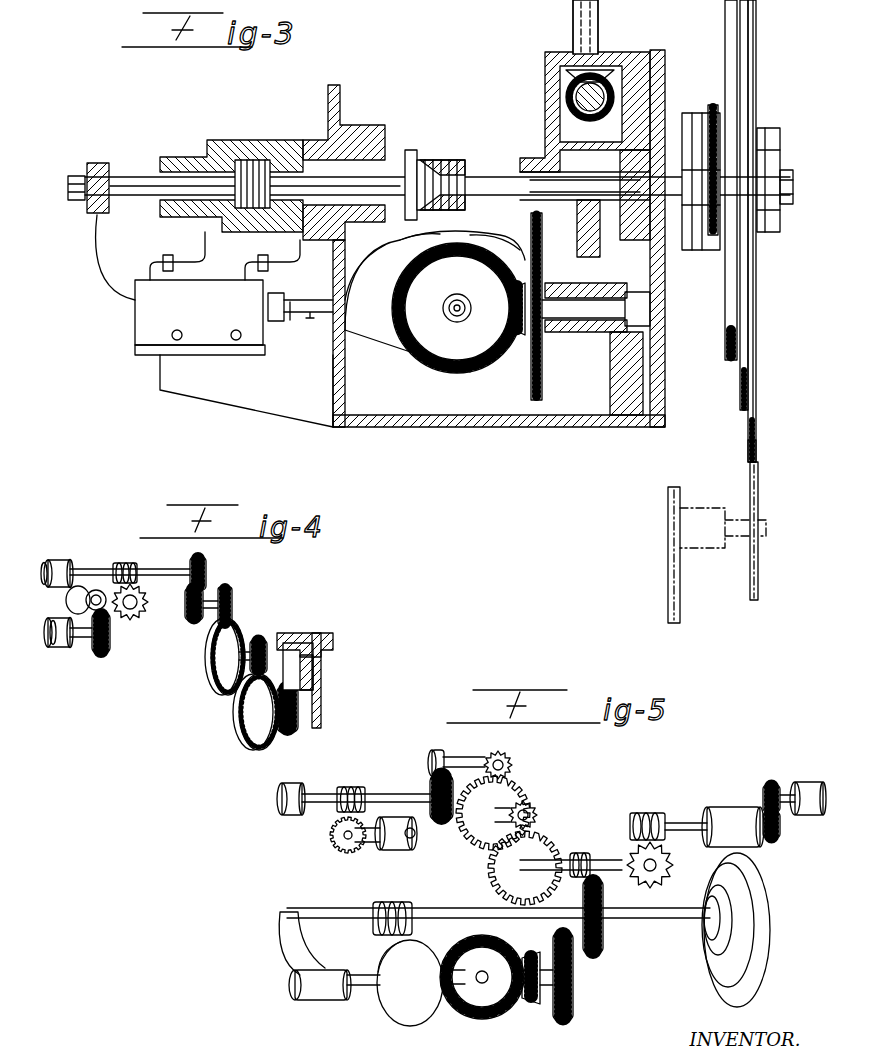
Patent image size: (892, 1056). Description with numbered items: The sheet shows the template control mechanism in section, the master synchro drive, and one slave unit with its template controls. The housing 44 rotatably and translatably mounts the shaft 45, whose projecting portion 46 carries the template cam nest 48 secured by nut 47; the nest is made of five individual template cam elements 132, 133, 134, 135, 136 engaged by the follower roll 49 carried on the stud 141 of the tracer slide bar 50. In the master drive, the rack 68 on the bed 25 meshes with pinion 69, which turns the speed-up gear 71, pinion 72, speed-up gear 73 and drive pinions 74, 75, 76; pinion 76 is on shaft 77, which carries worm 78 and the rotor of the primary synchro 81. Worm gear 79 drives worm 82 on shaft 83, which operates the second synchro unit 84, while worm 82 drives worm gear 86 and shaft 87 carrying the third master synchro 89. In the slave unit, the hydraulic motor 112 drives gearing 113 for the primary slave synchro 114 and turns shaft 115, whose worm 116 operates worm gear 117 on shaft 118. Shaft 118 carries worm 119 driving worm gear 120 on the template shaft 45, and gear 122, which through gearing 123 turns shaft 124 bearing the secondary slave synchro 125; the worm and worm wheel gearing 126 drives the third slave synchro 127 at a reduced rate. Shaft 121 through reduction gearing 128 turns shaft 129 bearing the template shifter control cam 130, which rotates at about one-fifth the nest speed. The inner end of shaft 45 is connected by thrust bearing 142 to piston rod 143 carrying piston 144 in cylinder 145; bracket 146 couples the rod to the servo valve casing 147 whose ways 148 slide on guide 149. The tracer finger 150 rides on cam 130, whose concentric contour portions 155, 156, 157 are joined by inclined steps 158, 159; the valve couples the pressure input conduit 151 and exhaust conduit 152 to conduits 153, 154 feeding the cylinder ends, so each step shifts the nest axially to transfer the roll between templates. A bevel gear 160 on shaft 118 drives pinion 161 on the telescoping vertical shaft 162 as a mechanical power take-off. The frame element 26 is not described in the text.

In FIG. 4, the bed 25 is at (321, 686).
In FIG. 4, the frame flange 26 is at (320, 633).
In FIG. 3, the housing 44 is at (575, 427).
In FIG. 3, the shaft 45 is at (540, 168).
In FIG. 5, the shaft 45 is at (681, 920).
In FIG. 3, the projecting portion of shaft 46 is at (790, 190).
In FIG. 3, the nut 47 is at (790, 178).
In FIG. 3, the template cam nest 48 is at (763, 42).
In FIG. 5, the template cam nest 48 is at (771, 940).
In FIG. 3, the follower roll 49 is at (758, 575).
In FIG. 3, the tracer slide bar 50 is at (688, 255).
In FIG. 4, the rack 68 is at (315, 674).
In FIG. 4, the pinion 69 is at (297, 730).
In FIG. 4, the speed-up gear 71 is at (236, 714).
In FIG. 4, the pinion 72 is at (258, 640).
In FIG. 4, the speed-up gear 73 is at (205, 672).
In FIG. 4, the drive pinion 74 is at (232, 602).
In FIG. 4, the drive pinion 75 is at (190, 620).
In FIG. 4, the drive pinion 76 is at (208, 571).
In FIG. 4, the shaft 77 is at (171, 567).
In FIG. 4, the worm 78 is at (121, 562).
In FIG. 4, the worm gear 79 is at (128, 621).
In FIG. 4, the primary synchro 81 is at (60, 560).
In FIG. 4, the worm 82 is at (45, 641).
In FIG. 4, the shaft 83 is at (66, 601).
In FIG. 4, the second synchro unit 84 is at (45, 587).
In FIG. 4, the worm gear 86 is at (108, 646).
In FIG. 4, the shaft 87 is at (82, 638).
In FIG. 4, the third master synchro 89 is at (55, 648).
In FIG. 5, the hydraulic motor 112 is at (746, 806).
In FIG. 5, the gearing 113 is at (785, 833).
In FIG. 5, the primary slave synchro 114 is at (809, 782).
In FIG. 5, the shaft 115 is at (686, 822).
In FIG. 5, the worm 116 is at (641, 812).
In FIG. 5, the worm gear 117 is at (650, 889).
In FIG. 3, the shaft 118 is at (592, 60).
In FIG. 5, the shaft 118 is at (571, 856).
In FIG. 5, the worm 119 is at (585, 853).
In FIG. 3, the worm gear 120 is at (548, 136).
In FIG. 5, the worm gear 120 is at (592, 954).
In FIG. 5, the shaft 121 is at (560, 1021).
In FIG. 5, the gear 122 is at (490, 879).
In FIG. 5, the gearing 123 is at (528, 786).
In FIG. 5, the shaft 124 is at (333, 793).
In FIG. 5, the secondary slave synchro 125 is at (285, 813).
In FIG. 5, the worm and worm wheel gearing 126 is at (360, 787).
In FIG. 5, the third slave synchro 127 is at (408, 851).
In FIG. 5, the reduction gearing 128 is at (529, 1006).
In FIG. 3, the shaft 129 is at (455, 318).
In FIG. 5, the shaft 129 is at (443, 1001).
In FIG. 3, the template shifter control cam 130 is at (385, 350).
In FIG. 5, the template shifter control cam 130 is at (386, 1016).
In FIG. 3, the template cam element 132 is at (712, 104).
In FIG. 3, the template cam element 133 is at (720, 310).
In FIG. 3, the template cam element 134 is at (740, 365).
In FIG. 3, the template cam element 135 is at (748, 405).
In FIG. 3, the template cam element 136 is at (758, 452).
In FIG. 3, the stud 141 is at (730, 535).
In FIG. 3, the thrust bearing 142 is at (455, 150).
In FIG. 3, the piston rod 143 is at (143, 178).
In FIG. 3, the piston 144 is at (252, 160).
In FIG. 5, the piston 144 is at (380, 902).
In FIG. 3, the cylinder 145 is at (172, 155).
In FIG. 3, the bracket 146 is at (98, 282).
In FIG. 3, the servo valve casing 147 is at (135, 328).
In FIG. 3, the ways 148 is at (135, 350).
In FIG. 3, the guide 149 is at (270, 405).
In FIG. 3, the tracer finger 150 is at (318, 298).
In FIG. 5, the tracer finger 150 is at (365, 985).
In FIG. 3, the hydraulic pressure input conduit 151 is at (180, 340).
In FIG. 3, the exhaust conduit 152 is at (232, 340).
In FIG. 3, the conduit 153 is at (205, 252).
In FIG. 3, the conduit 154 is at (297, 252).
In FIG. 3, the contour portion 155 is at (345, 300).
In FIG. 3, the contour portion 156 is at (445, 232).
In FIG. 3, the contour portion 157 is at (525, 250).
In FIG. 3, the inclined step 158 is at (400, 243).
In FIG. 3, the inclined step 159 is at (485, 232).
In FIG. 3, the bevel gear 160 is at (566, 92).
In FIG. 3, the pinion 161 is at (575, 70).
In FIG. 3, the vertical shaft 162 is at (573, 24).